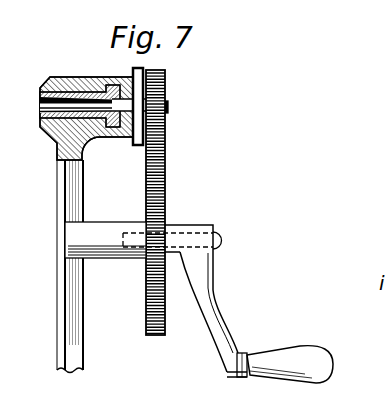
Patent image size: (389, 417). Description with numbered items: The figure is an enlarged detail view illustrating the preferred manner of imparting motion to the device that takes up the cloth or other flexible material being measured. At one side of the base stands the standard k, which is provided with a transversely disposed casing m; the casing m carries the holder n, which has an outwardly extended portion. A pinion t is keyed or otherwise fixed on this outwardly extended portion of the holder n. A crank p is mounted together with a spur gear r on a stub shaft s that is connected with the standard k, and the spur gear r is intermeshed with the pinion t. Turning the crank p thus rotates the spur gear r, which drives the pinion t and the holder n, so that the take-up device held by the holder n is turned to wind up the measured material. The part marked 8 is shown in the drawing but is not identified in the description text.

The holder n is at (45, 107).
The casing m is at (103, 142).
The arm 8 is at (101, 226).
The pinion t is at (164, 76).
The spur gear r is at (158, 337).
The standard k is at (63, 332).
The stub shaft s is at (216, 236).
The crank p is at (215, 318).